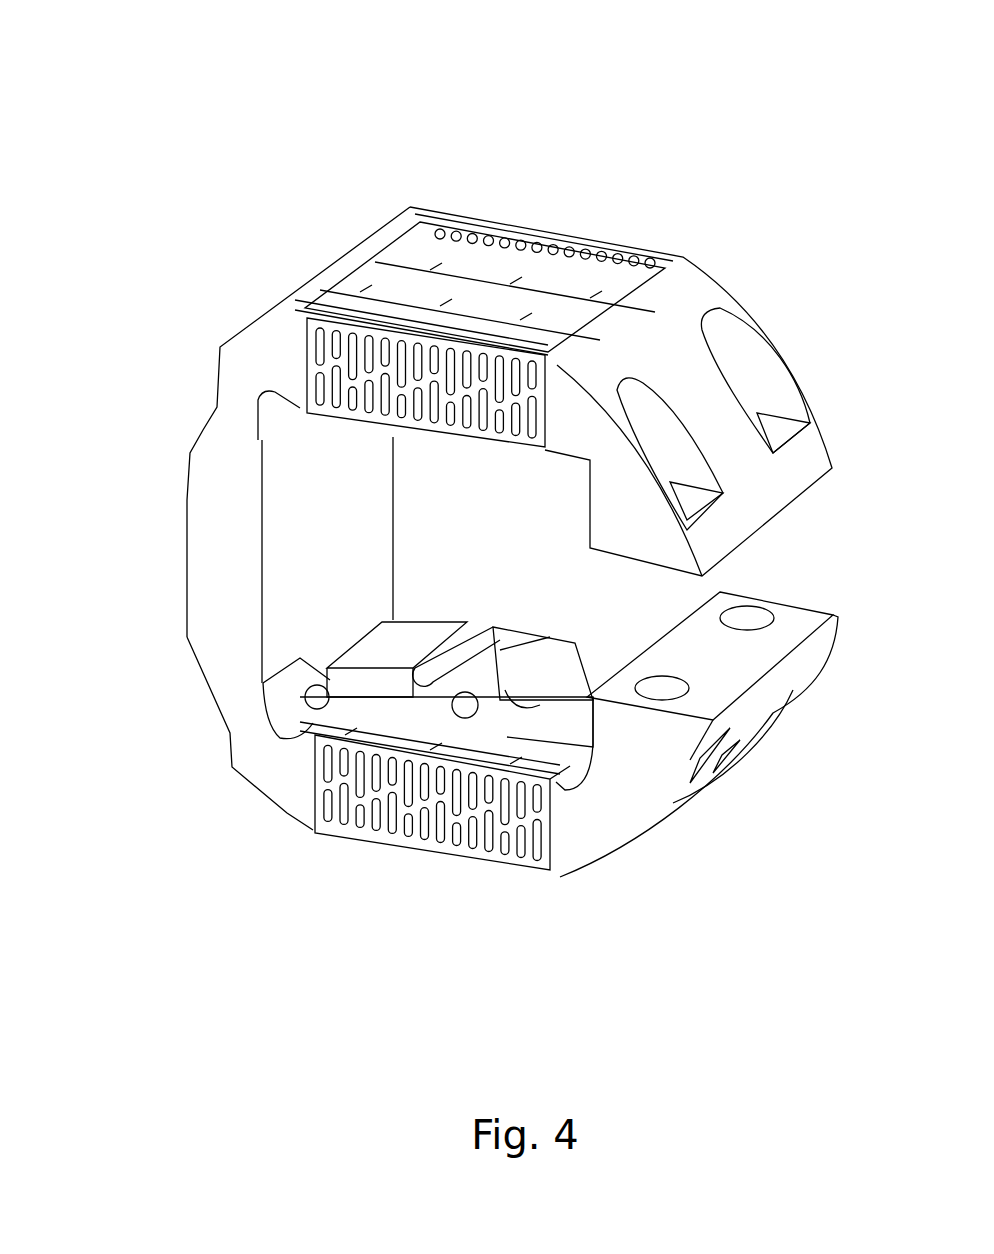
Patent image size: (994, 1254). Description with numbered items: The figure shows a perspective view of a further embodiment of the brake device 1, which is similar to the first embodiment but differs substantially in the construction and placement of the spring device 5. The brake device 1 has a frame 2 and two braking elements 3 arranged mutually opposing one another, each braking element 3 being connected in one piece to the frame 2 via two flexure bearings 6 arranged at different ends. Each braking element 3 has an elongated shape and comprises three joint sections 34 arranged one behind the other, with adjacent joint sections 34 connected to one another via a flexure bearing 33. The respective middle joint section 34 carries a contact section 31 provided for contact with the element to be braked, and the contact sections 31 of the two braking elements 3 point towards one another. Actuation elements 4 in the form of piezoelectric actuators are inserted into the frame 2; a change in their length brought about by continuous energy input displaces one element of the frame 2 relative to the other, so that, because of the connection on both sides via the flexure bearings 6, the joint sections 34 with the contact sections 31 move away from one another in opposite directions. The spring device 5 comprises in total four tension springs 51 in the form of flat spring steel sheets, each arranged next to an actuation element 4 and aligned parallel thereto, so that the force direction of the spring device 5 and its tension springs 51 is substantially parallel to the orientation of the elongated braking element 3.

The brake device 1 is at (330, 172).
The frame 2 is at (658, 327).
The braking element 3 is at (582, 672).
The actuation element 4 is at (500, 262).
The spring device 5 is at (391, 880).
The flexure bearing 6 is at (310, 682).
The contact section 31 is at (458, 455).
The flexure bearing 33 is at (502, 697).
The joint section 34 is at (437, 437).
The tension spring 51 is at (578, 237).